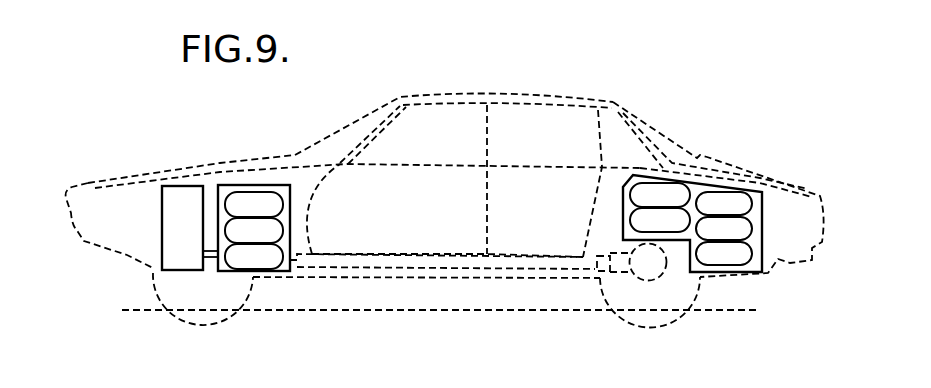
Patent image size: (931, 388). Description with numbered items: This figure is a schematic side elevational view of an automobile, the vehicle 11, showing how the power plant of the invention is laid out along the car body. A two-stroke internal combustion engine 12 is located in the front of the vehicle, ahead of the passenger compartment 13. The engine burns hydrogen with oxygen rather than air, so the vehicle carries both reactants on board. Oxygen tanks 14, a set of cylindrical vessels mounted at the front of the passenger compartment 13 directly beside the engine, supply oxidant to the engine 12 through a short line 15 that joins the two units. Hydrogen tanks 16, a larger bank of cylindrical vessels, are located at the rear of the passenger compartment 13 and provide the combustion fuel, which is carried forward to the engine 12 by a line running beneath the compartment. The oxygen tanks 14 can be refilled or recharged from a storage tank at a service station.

The vehicle 11 is at (634, 106).
The two-stroke internal combustion engine 12 is at (180, 192).
The passenger compartment 13 is at (427, 222).
The oxygen tanks 14 is at (247, 198).
The line 15 is at (213, 256).
The hydrogen tanks 16 is at (730, 200).